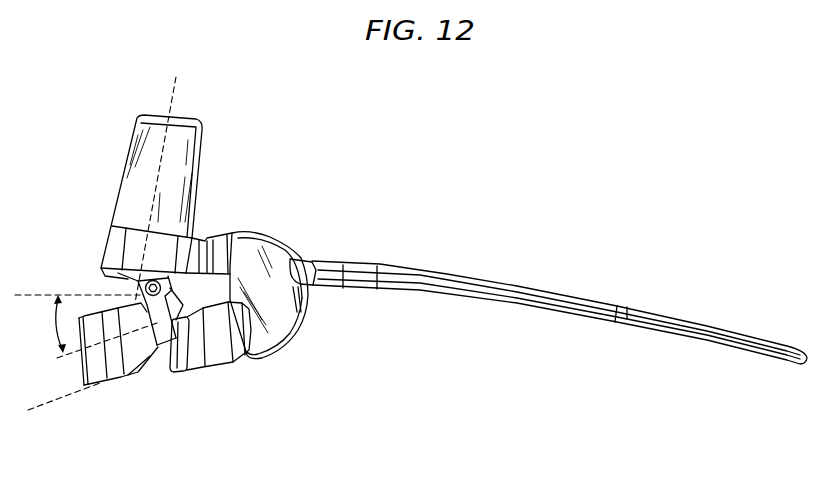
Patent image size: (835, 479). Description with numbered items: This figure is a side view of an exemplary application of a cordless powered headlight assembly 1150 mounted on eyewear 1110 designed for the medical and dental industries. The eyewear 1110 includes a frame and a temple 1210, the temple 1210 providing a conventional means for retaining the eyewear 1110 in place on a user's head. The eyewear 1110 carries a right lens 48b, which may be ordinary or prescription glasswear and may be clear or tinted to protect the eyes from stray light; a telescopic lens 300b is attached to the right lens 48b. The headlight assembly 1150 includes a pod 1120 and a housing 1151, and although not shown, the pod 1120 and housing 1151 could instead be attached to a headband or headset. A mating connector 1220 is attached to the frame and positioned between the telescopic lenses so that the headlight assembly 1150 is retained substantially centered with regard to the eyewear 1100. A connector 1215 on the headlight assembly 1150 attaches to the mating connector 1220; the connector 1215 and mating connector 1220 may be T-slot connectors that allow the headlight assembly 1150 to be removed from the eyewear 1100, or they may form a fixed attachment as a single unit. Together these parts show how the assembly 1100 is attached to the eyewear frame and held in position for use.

The eyewear 1100 is at (208, 90).
The cordless powered headlight assembly 1150 is at (131, 110).
The pod 1120 is at (186, 157).
The housing 1151 is at (98, 388).
The telescopic lens 300b is at (181, 371).
The connector 1215 is at (190, 247).
The mating connector 1220 is at (220, 250).
The eyewear 1110 is at (287, 343).
The right lens 48b is at (283, 310).
The temple 1210 is at (517, 287).